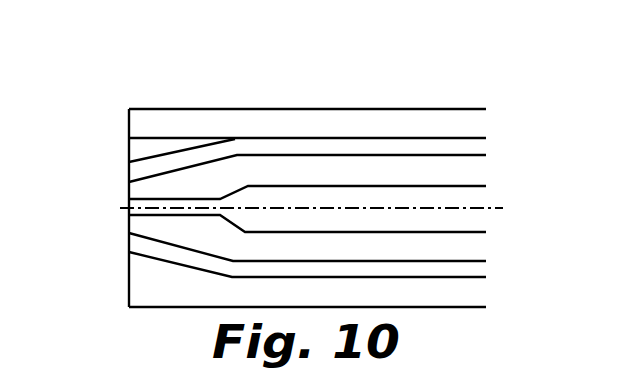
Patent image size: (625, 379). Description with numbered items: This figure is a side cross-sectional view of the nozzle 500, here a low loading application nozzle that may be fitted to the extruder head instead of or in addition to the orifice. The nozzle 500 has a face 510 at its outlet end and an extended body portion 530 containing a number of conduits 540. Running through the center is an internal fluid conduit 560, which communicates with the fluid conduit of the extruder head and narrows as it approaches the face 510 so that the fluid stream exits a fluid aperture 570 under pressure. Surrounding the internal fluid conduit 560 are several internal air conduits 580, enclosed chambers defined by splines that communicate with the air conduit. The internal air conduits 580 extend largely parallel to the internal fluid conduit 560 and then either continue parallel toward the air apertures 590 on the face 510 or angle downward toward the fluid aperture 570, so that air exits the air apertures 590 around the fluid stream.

The nozzle 500 is at (153, 73).
The face 510 is at (133, 150).
The extended body portion 530 is at (213, 107).
The conduits 540 is at (433, 136).
The internal fluid conduit 560 is at (370, 195).
The fluid aperture 570 is at (130, 209).
The internal air conduits 580 is at (293, 145).
The air apertures 590 is at (133, 175).